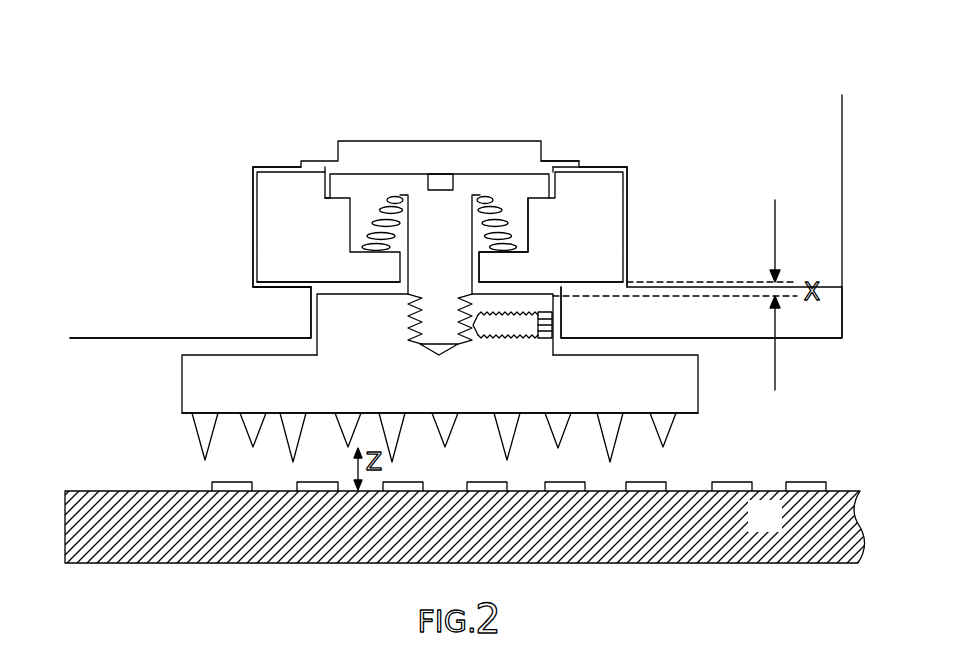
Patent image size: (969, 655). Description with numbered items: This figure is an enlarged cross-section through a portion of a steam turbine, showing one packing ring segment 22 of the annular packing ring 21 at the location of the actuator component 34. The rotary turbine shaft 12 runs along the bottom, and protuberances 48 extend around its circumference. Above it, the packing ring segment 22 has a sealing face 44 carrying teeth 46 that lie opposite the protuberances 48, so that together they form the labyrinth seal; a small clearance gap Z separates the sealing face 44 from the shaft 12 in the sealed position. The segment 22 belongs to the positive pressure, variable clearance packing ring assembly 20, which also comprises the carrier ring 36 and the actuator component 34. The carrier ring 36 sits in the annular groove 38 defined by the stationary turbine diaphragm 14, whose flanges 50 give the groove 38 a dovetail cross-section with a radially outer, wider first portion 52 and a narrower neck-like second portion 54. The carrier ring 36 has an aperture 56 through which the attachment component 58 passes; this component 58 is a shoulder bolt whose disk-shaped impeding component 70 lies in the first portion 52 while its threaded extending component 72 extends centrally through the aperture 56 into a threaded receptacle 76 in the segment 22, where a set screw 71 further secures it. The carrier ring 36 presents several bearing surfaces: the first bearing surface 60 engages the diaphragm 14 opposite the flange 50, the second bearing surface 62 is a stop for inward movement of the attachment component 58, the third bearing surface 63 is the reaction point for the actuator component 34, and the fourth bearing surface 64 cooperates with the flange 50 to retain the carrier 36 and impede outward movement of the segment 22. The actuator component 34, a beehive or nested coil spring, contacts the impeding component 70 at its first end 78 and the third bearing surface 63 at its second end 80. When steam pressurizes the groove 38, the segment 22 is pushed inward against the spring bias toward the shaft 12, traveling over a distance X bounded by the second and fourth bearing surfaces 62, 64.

The turbine shaft 12 is at (753, 529).
The stationary turbine diaphragm 14 is at (844, 240).
The positive pressure, variable clearance packing ring assembly 20 is at (296, 152).
The annular packing ring 21 is at (172, 406).
The packing ring segment 22 is at (200, 380).
The actuator component 34 is at (389, 196).
The carrier ring 36 is at (298, 248).
The annular groove 38 is at (250, 188).
The sealing face 44 is at (232, 414).
The teeth 46 is at (665, 432).
The protuberances 48 is at (817, 482).
The flanges 50 is at (260, 325).
The first portion 52 is at (253, 237).
The second portion 54 is at (316, 312).
The apertures 56 is at (407, 283).
The attachment component 58 is at (466, 171).
The first bearing surface 60 is at (268, 170).
The second bearing surface 62 is at (330, 205).
The third bearing surface 63 is at (360, 255).
The fourth bearing surface 64 is at (277, 283).
The impeding component 70 is at (353, 185).
The set screw 71 is at (528, 335).
The extending component 72 is at (432, 242).
The threaded receptacles 76 is at (462, 345).
The first end 78 is at (489, 196).
The second end 80 is at (513, 240).